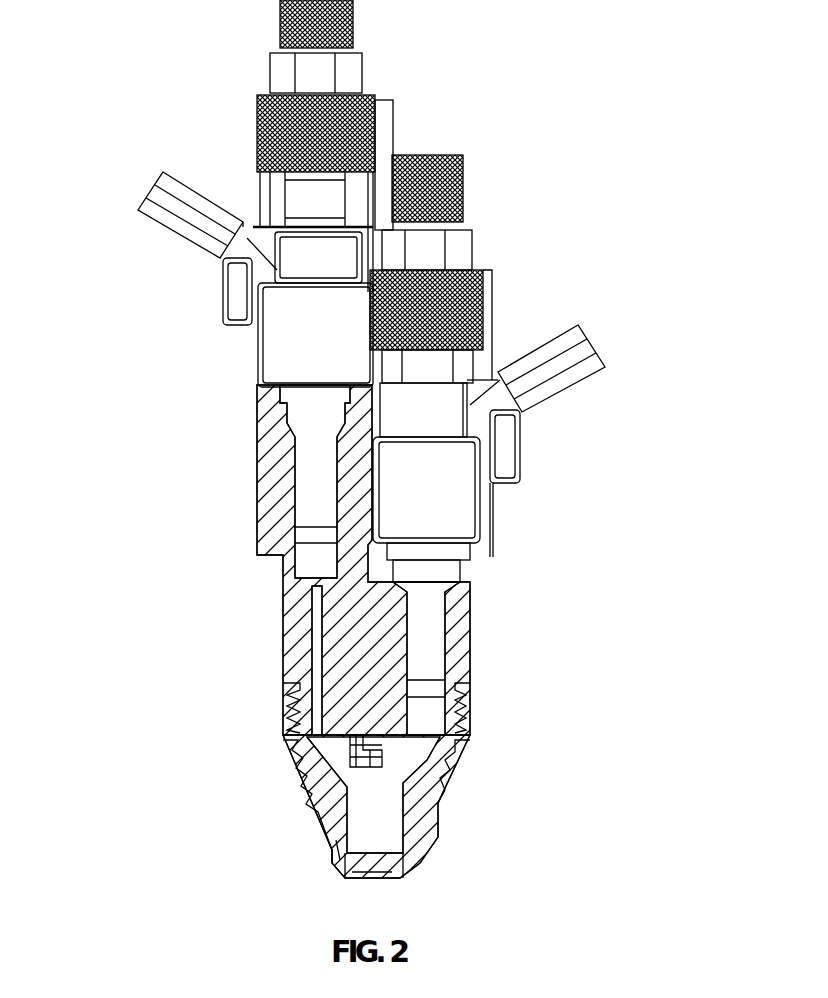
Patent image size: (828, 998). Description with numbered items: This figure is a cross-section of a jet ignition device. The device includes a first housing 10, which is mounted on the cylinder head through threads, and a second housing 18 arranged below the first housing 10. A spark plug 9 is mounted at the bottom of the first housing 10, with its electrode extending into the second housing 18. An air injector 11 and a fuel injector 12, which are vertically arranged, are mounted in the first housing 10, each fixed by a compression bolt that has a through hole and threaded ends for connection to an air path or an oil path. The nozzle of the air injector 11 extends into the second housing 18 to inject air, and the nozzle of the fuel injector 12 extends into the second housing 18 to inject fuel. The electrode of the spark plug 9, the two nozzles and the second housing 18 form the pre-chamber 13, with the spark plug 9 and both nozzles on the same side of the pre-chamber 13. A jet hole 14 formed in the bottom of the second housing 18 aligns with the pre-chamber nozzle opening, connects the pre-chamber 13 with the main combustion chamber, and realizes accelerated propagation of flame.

The spark plug 9 is at (352, 756).
The first housing 10 is at (277, 510).
The air injector 11 is at (295, 375).
The fuel injector 12 is at (455, 518).
The pre-chamber 13 is at (382, 792).
The jet hole 14 is at (378, 876).
The second housing 18 is at (338, 817).